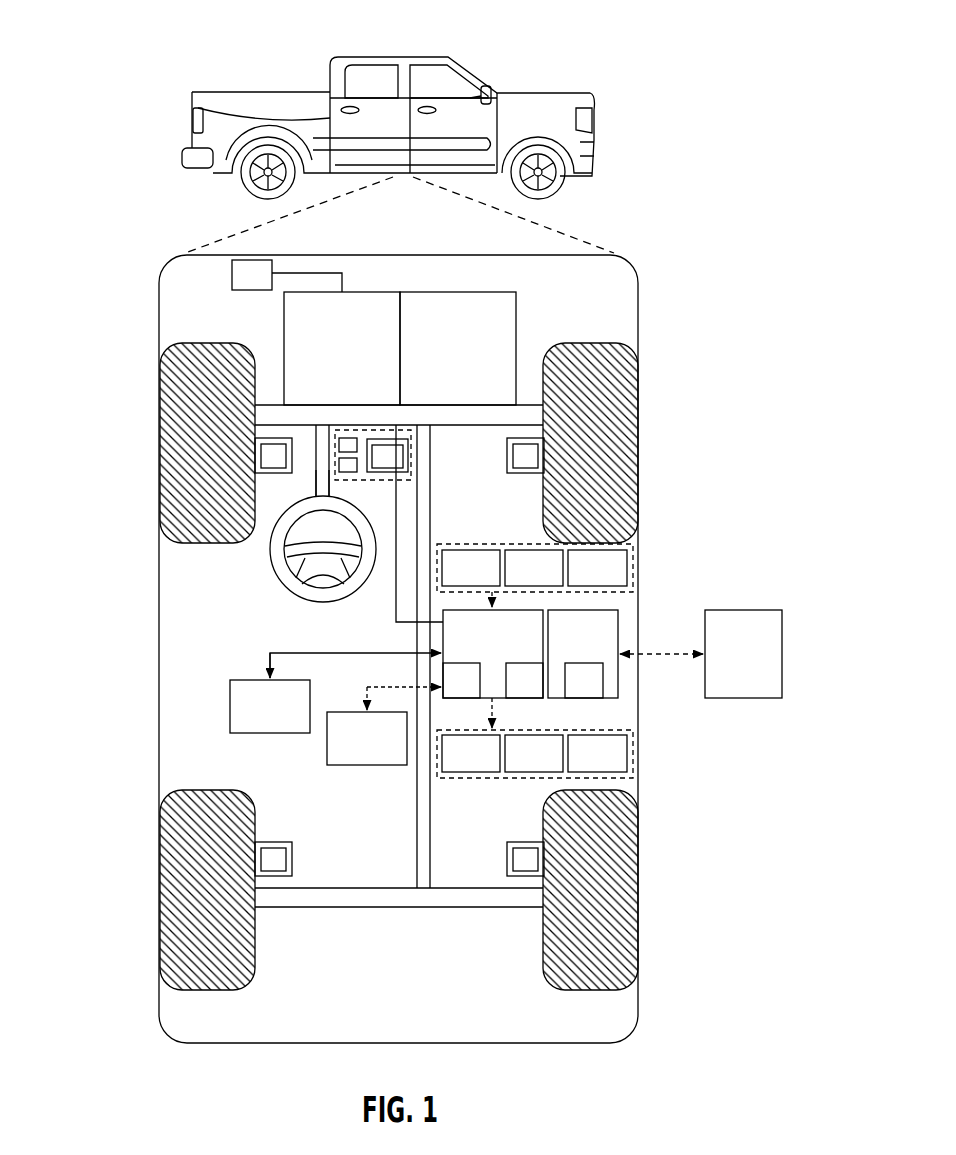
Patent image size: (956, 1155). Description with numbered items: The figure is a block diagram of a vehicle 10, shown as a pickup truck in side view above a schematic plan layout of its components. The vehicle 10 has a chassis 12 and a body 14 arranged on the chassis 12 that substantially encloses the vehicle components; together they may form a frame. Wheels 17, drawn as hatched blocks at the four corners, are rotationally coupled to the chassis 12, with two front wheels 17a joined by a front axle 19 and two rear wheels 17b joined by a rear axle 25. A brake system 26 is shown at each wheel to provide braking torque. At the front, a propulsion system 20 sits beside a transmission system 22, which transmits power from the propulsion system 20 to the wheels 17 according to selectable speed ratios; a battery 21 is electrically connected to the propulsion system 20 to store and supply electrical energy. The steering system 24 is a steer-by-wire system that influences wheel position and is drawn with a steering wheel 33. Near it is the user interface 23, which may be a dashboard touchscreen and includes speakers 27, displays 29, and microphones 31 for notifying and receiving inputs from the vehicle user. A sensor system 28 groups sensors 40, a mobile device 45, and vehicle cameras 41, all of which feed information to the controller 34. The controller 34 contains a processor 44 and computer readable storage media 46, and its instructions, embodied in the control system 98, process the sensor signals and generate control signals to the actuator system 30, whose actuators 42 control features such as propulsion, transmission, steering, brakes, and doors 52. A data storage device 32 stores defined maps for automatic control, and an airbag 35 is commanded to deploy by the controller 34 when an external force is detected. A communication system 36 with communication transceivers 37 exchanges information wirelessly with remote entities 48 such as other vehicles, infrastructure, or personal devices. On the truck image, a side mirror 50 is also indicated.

The vehicle 10 is at (547, 91).
The side mirror 50 is at (489, 87).
The doors 52 is at (453, 123).
The body 14 is at (159, 622).
The wheels 17 is at (398, 654).
The front wheels 17a is at (180, 435).
The rear wheels 17b is at (180, 888).
The battery 21 is at (253, 260).
The propulsion system 20 is at (327, 362).
The transmission system 22 is at (444, 362).
The front axle 19 is at (486, 427).
The rear axle 25 is at (455, 888).
The chassis 12 is at (416, 788).
The displays 29 is at (330, 465).
The steering system 24 is at (337, 486).
The steering wheel 33 is at (273, 562).
The user interface 23 is at (380, 430).
The speakers 27 is at (345, 438).
The microphones 31 is at (375, 468).
The brake system 26 is at (263, 467).
The sensor system 28 is at (502, 544).
The sensors 40 is at (459, 582).
The mobile device 45 is at (522, 582).
The vehicle cameras 41 is at (585, 582).
The controller 34 is at (479, 651).
The processor 44 is at (451, 693).
The computer readable storage device or media 46 is at (514, 693).
The communication system 36 is at (569, 651).
The communication transceivers 37 is at (573, 693).
The remote entities 48 is at (730, 668).
The actuator system 30 is at (508, 778).
The actuators 42 is at (459, 767).
The control system 98 is at (370, 643).
The airbags 35 is at (256, 721).
The data storage device 32 is at (353, 753).